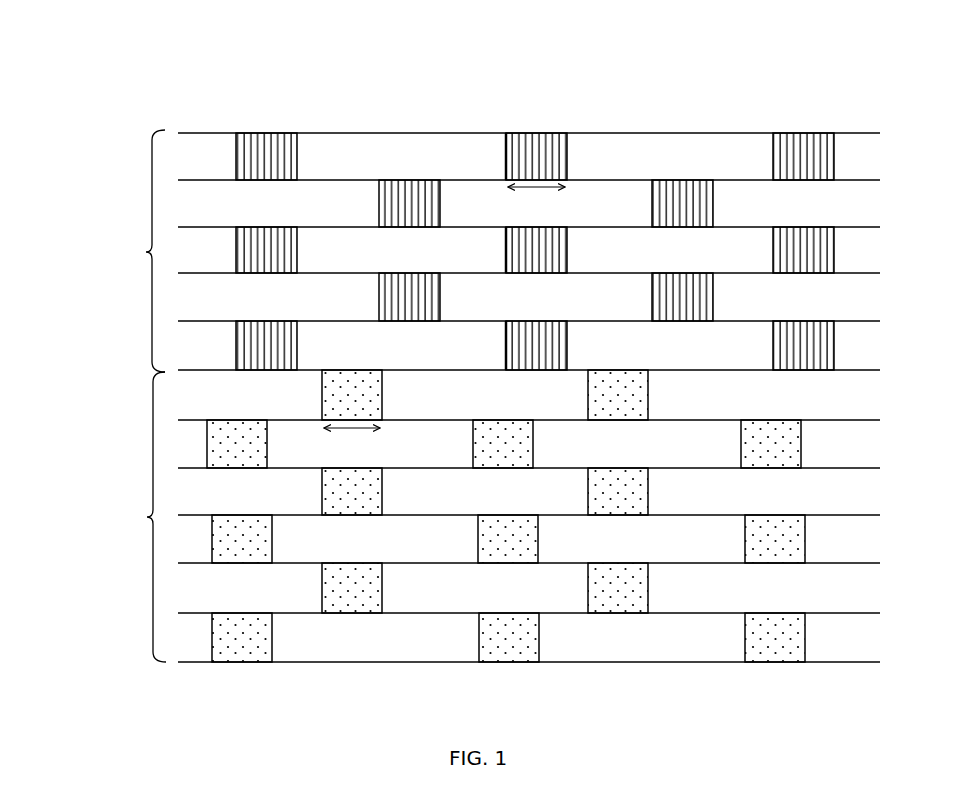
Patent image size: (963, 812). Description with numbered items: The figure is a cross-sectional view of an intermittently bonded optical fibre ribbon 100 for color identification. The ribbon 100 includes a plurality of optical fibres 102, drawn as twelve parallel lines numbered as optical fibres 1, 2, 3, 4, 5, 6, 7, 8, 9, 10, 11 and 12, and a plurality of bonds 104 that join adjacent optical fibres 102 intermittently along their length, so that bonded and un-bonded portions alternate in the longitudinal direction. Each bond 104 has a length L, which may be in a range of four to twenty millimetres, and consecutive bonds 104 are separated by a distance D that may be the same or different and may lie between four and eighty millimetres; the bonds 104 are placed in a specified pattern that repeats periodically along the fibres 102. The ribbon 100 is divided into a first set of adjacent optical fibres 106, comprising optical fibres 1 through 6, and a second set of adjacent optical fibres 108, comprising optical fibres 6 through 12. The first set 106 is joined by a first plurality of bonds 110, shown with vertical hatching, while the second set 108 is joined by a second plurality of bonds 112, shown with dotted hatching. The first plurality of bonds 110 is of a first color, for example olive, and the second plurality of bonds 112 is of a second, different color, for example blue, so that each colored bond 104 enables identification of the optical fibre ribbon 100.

The intermittently bonded optical fibre ribbon 100 is at (44, 24).
The optical fibres 102 is at (540, 110).
The bonds 104 is at (506, 157).
The first set of adjacent optical fibres 106 is at (152, 252).
The second set of adjacent optical fibres 108 is at (152, 517).
The first plurality of bonds 110 is at (236, 157).
The second plurality of bonds 112 is at (272, 637).
The optical fibre 1 is at (681, 133).
The optical fibre 2 is at (540, 180).
The optical fibre 3 is at (540, 227).
The optical fibre 4 is at (540, 273).
The optical fibre 5 is at (540, 321).
The optical fibre 6 is at (540, 370).
The optical fibre 7 is at (540, 420).
The optical fibre 8 is at (540, 468).
The optical fibre 9 is at (540, 515).
The optical fibre 10 is at (544, 563).
The optical fibre 11 is at (544, 613).
The optical fibre 12 is at (544, 662).